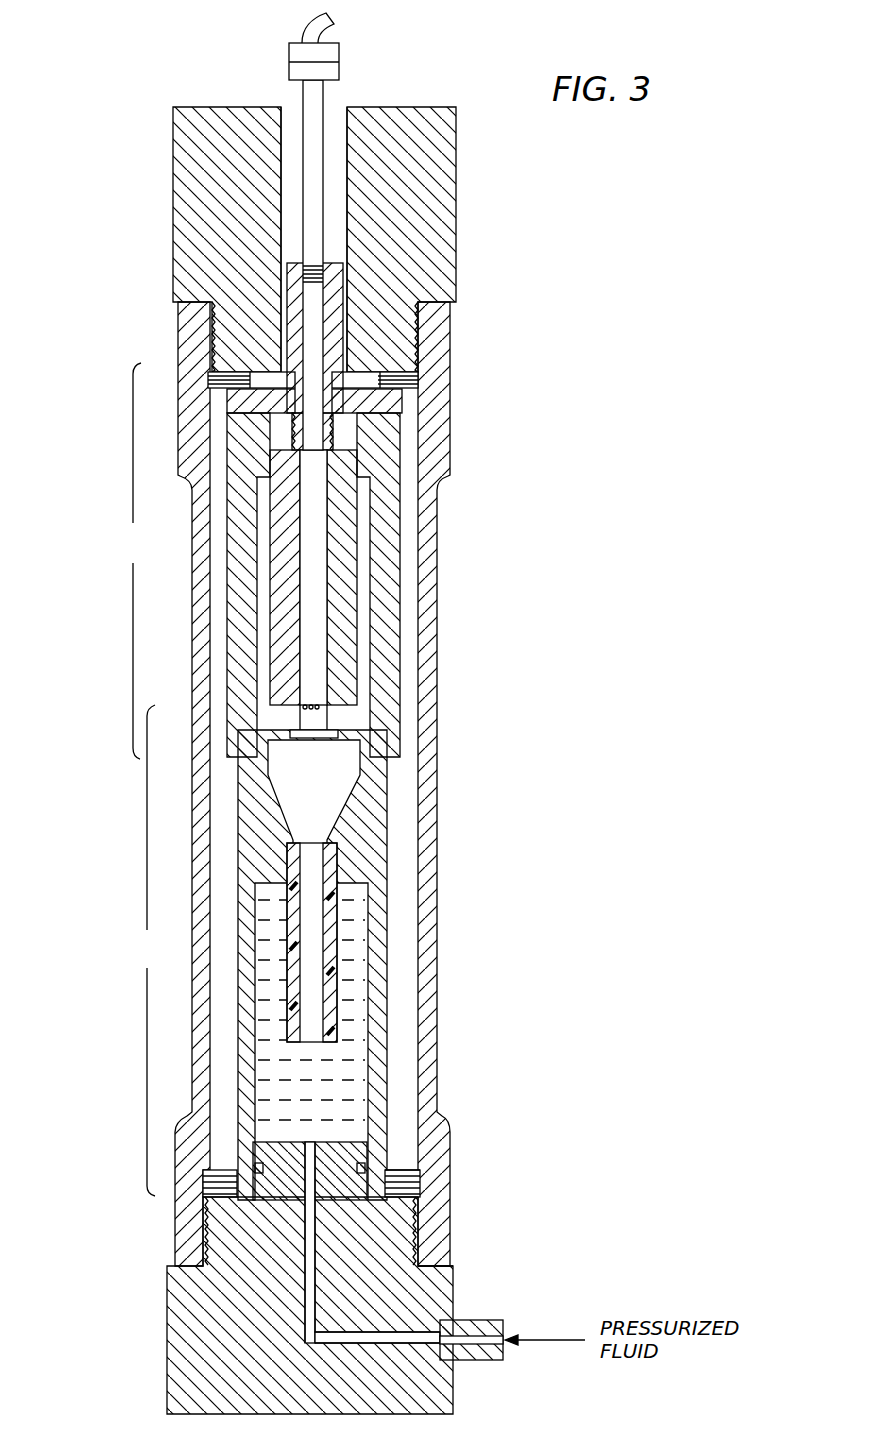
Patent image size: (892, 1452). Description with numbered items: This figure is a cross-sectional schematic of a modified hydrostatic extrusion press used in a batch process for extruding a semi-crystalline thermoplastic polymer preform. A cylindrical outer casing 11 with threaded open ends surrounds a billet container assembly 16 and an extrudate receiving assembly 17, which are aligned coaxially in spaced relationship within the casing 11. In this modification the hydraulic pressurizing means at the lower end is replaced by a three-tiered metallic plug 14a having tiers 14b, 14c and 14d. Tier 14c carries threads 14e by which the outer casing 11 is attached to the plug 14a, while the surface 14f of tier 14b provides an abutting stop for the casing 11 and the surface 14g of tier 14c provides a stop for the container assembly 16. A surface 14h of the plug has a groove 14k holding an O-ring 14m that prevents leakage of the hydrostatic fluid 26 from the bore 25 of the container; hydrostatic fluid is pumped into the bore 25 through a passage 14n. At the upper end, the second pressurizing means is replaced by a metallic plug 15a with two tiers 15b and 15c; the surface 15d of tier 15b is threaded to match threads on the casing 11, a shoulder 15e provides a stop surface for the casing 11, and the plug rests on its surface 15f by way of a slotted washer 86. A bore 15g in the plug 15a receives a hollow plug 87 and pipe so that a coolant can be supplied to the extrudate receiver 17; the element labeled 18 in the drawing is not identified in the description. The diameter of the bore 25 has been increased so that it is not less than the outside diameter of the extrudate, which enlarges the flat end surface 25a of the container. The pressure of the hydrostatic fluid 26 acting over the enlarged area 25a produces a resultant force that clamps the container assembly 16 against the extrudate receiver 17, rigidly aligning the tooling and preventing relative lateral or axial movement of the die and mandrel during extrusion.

The outer casing 11 is at (450, 462).
The three-tiered metallic plug 14a is at (446, 1303).
The tier 14b is at (455, 1401).
The tier 14c is at (416, 1192).
The tier 14d is at (258, 1163).
The threads 14e is at (421, 1230).
The surface 14f is at (452, 1265).
The surface 14g is at (421, 1165).
The surface 14h is at (190, 1260).
The groove 14k is at (270, 1165).
The O-ring 14m is at (360, 1163).
The passage 14n is at (515, 1342).
The metallic plug 15a is at (446, 190).
The tier 15b is at (455, 258).
The tier 15c is at (424, 381).
The threaded surface 15d is at (426, 362).
The shoulder 15e is at (422, 310).
The surface 15f is at (424, 404).
The bore 15g is at (290, 118).
The billet container assembly 16 is at (144, 950).
The extrudate receiving assembly 17 is at (133, 561).
The rod 18 is at (323, 96).
The bore 25 is at (364, 1021).
The flat end surface 25a is at (350, 880).
The hydrostatic fluid 26 is at (356, 940).
The slotted washer 86 is at (258, 378).
The hollow plug 87 is at (294, 270).